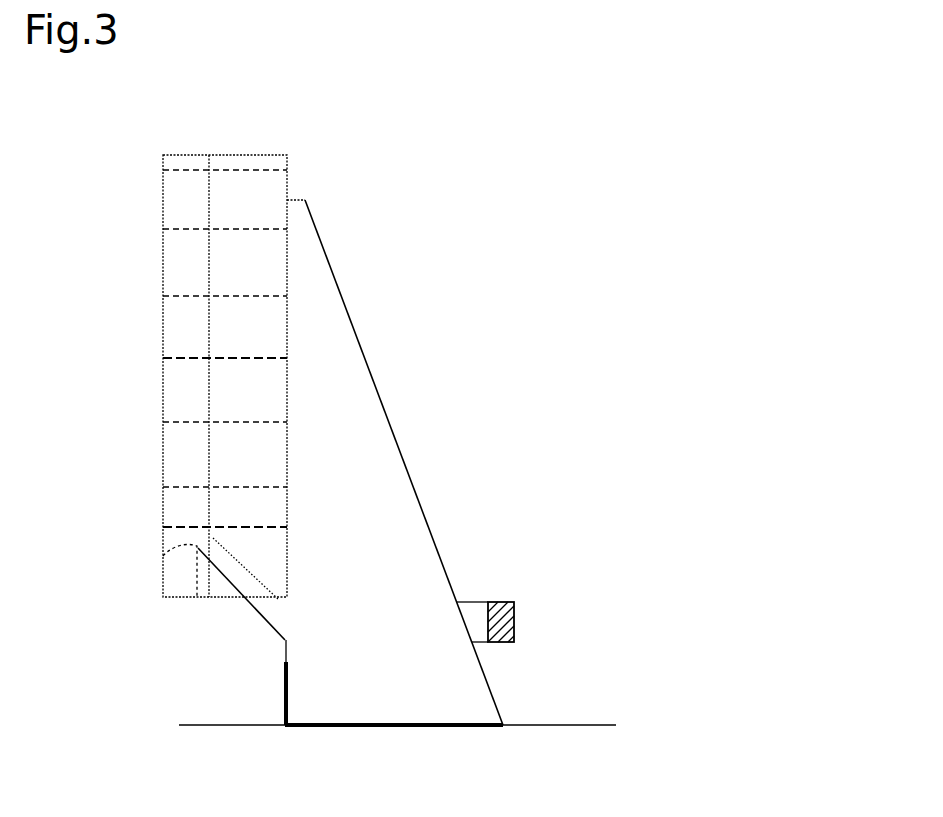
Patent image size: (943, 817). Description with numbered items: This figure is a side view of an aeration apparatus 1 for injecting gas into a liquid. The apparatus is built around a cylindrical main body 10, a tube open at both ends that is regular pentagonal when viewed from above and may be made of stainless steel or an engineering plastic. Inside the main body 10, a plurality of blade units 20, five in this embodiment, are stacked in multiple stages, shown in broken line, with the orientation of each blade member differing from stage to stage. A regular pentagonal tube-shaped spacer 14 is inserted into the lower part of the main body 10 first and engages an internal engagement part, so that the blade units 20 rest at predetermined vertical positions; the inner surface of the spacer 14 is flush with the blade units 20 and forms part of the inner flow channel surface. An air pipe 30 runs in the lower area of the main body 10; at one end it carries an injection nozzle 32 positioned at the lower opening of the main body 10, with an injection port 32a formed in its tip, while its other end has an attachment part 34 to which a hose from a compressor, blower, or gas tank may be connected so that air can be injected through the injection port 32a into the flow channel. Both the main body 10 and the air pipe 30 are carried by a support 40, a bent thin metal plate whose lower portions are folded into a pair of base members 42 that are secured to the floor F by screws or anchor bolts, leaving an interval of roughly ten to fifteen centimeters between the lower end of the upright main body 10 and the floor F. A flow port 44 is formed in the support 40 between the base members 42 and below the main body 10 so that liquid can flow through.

The aeration apparatus 1 is at (512, 396).
The main body 10 is at (230, 160).
The spacer 14 is at (178, 510).
The blade unit 20 is at (178, 197).
The air pipe 30 is at (470, 600).
The injection nozzle 32 is at (197, 600).
The injection port 32a is at (200, 540).
The attachment part 34 is at (514, 622).
The support 40 is at (388, 472).
The base member 42 is at (405, 727).
The flow port 44 is at (283, 683).
The floor F is at (192, 722).